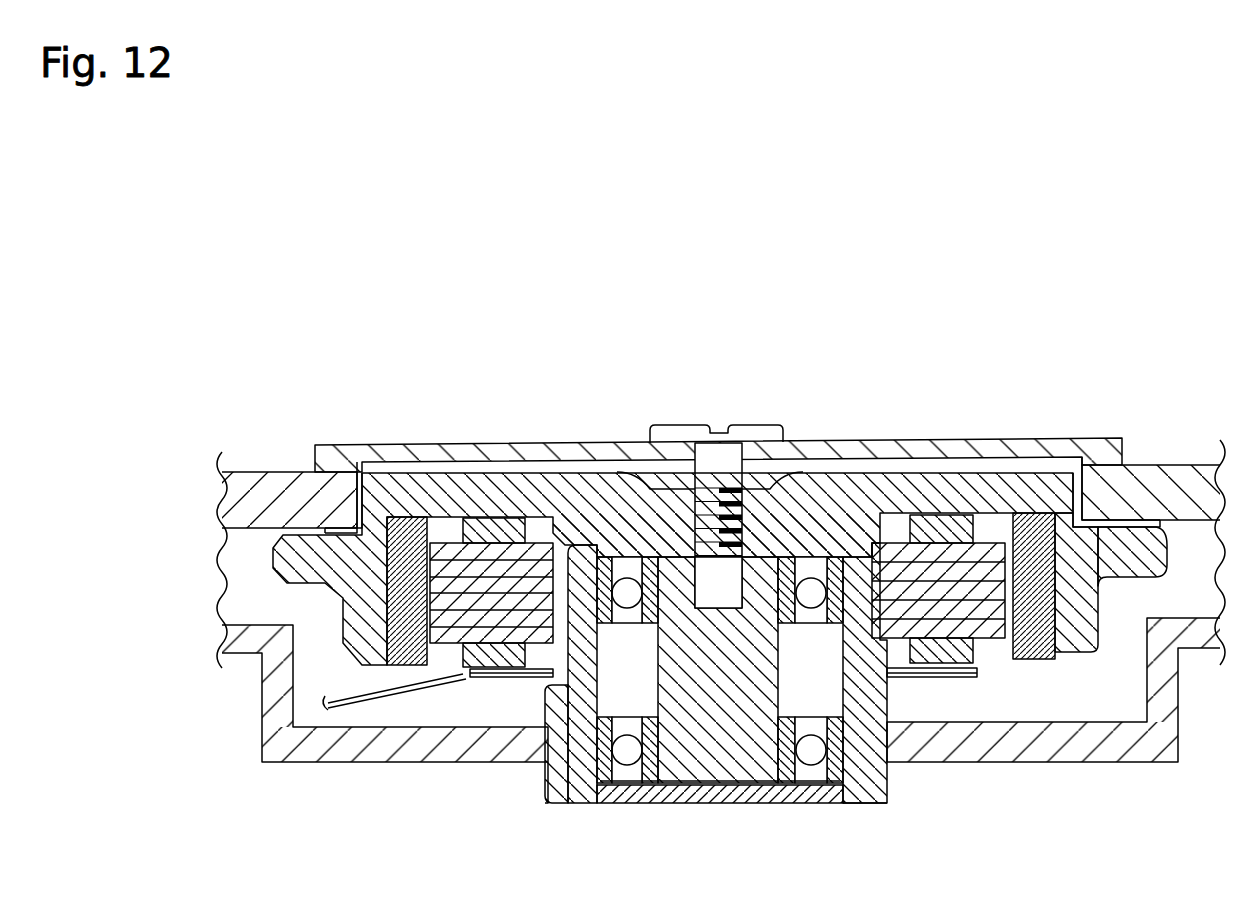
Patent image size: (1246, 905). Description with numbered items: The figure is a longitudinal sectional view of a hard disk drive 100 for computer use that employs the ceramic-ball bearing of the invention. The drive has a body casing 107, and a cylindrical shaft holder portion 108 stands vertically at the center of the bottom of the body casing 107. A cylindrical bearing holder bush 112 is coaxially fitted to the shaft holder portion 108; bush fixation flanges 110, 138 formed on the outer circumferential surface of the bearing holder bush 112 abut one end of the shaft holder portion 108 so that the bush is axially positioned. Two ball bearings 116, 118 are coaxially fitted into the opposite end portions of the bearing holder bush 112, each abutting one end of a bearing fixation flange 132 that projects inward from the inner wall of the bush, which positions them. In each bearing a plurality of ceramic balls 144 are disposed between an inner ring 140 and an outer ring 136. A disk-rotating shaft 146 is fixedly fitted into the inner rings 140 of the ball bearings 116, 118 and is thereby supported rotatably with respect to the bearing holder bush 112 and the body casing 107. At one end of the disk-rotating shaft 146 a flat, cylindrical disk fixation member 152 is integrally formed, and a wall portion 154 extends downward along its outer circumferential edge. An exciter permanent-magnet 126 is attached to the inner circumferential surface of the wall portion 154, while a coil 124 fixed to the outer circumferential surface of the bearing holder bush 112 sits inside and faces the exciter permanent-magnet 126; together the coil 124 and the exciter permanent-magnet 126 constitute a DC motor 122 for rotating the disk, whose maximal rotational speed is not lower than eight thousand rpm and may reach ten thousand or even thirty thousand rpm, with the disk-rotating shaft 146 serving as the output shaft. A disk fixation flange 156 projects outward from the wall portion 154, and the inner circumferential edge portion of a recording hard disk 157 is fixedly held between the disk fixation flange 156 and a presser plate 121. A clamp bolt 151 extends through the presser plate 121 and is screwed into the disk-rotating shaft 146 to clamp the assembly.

The hard disk drive 100 is at (308, 428).
The body casing 107 is at (1075, 760).
The shaft holder portion 108 is at (885, 773).
The bush fixation flange 110 is at (887, 698).
The bearing holder bush 112 is at (868, 808).
The ball bearing 116 is at (614, 628).
The ball bearing 118 is at (782, 708).
The presser plate 121 is at (353, 450).
The DC motor 122 is at (471, 682).
The coil 124 is at (555, 545).
The exciter permanent-magnet 126 is at (1030, 513).
The bearing fixation flange 132 is at (547, 779).
The outer ring 136 is at (585, 520).
The bush fixation flange 138 is at (553, 680).
The inner ring 140 is at (923, 680).
The ceramic ball 144 is at (810, 595).
The disk-rotating shaft 146 is at (707, 757).
The clamp bolt 151 is at (652, 432).
The disk fixation member 152 is at (942, 477).
The wall portion 154 is at (1068, 623).
The disk fixation flange 156 is at (1157, 537).
The recording hard disk 157 is at (1142, 480).